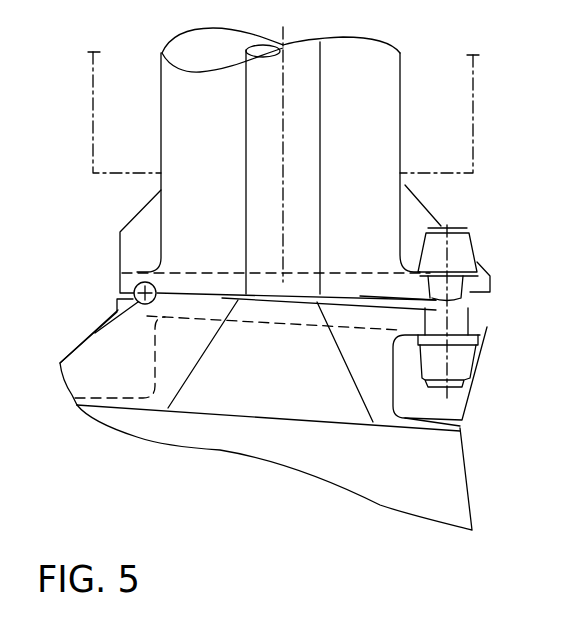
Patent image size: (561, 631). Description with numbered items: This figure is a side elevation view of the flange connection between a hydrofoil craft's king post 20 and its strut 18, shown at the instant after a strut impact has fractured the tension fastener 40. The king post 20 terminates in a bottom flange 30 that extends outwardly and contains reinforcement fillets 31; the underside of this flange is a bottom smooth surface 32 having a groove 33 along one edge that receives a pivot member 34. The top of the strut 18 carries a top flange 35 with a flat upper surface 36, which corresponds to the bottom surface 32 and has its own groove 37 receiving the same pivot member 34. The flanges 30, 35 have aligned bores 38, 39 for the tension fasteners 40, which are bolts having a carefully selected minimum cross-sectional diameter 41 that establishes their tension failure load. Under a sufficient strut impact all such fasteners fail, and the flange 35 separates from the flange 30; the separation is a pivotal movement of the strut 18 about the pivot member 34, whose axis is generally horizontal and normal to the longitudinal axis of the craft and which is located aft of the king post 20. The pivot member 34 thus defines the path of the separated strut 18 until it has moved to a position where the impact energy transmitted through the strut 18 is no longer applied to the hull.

The strut 18 is at (450, 479).
The king post 20 is at (372, 138).
The bottom flange 30 is at (487, 289).
The reinforcement fillets 31 is at (409, 217).
The bottom smooth surface 32 is at (378, 293).
The groove 33 is at (137, 285).
The pivot member 34 is at (154, 285).
The top flange 35 is at (472, 318).
The flat upper surface 36 is at (300, 301).
The groove 37 is at (107, 321).
The bore 38 is at (470, 298).
The bore 39 is at (478, 345).
The tension fastener 40 is at (459, 256).
The minimum cross-sectional diameter 41 is at (424, 307).